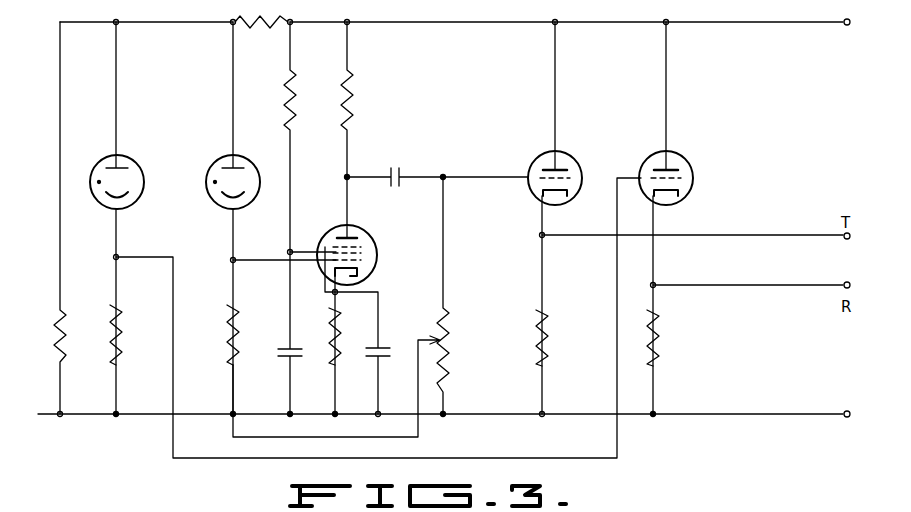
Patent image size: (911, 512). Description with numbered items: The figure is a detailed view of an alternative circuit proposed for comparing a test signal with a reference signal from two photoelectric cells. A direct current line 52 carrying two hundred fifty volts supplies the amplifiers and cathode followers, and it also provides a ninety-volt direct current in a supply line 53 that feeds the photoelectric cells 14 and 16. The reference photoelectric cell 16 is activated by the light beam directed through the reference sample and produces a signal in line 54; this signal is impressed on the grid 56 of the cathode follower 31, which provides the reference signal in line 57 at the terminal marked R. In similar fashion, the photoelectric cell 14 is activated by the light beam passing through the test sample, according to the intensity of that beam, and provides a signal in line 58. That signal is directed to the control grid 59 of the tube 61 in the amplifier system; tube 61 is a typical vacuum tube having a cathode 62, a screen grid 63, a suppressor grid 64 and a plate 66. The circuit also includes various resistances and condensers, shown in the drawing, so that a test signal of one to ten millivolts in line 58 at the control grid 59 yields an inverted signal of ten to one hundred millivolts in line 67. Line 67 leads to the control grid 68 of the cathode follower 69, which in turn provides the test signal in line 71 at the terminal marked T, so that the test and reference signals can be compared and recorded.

The photoelectric cell 14 is at (251, 165).
The reference photoelectric cell 16 is at (135, 165).
The cathode follower 31 is at (683, 218).
The direct current line 52 is at (745, 22).
The supply line 53 is at (185, 22).
The line 54 is at (150, 257).
The grid 56 is at (690, 180).
The line 57 is at (727, 285).
The line 58 is at (244, 260).
The control grid 59 is at (358, 264).
The tube 61 is at (362, 230).
The cathode 62 is at (356, 282).
The screen grid 63 is at (362, 253).
The suppressor grid 64 is at (362, 247).
The plate 66 is at (338, 232).
The line 67 is at (506, 177).
The control grid 68 is at (578, 180).
The cathode follower 69 is at (570, 218).
The line 71 is at (740, 235).